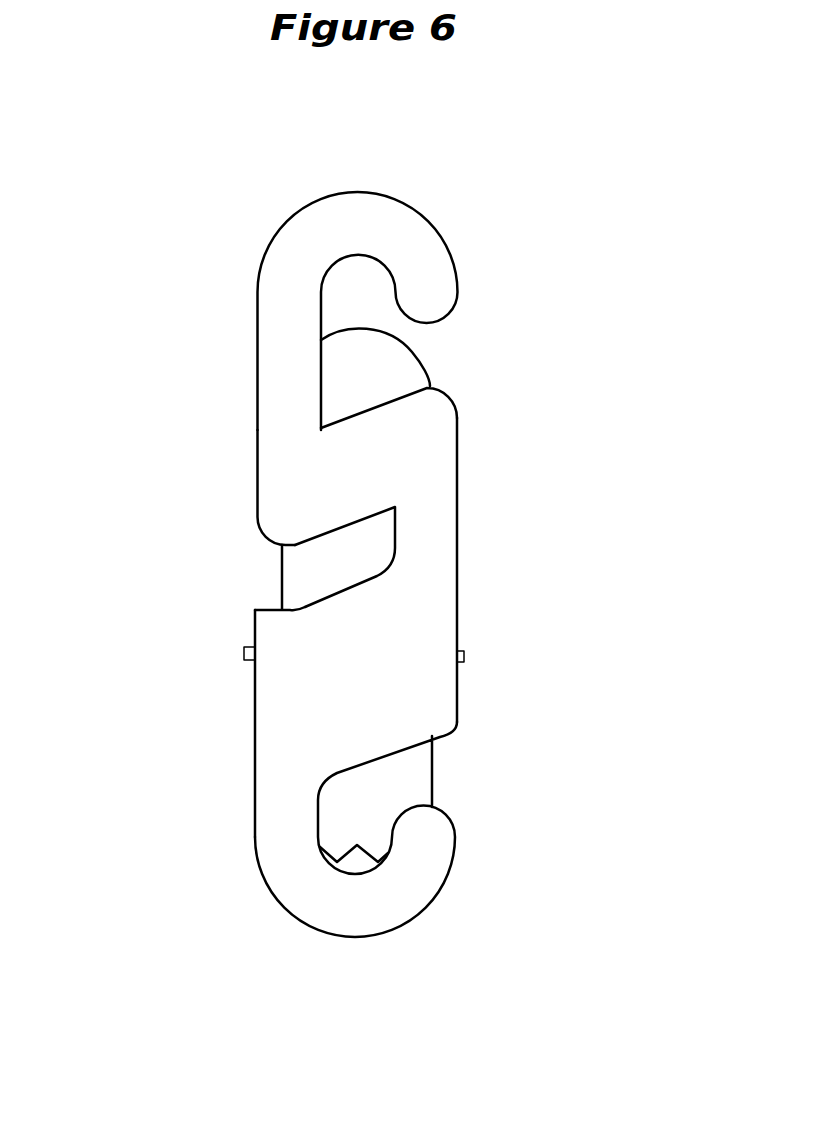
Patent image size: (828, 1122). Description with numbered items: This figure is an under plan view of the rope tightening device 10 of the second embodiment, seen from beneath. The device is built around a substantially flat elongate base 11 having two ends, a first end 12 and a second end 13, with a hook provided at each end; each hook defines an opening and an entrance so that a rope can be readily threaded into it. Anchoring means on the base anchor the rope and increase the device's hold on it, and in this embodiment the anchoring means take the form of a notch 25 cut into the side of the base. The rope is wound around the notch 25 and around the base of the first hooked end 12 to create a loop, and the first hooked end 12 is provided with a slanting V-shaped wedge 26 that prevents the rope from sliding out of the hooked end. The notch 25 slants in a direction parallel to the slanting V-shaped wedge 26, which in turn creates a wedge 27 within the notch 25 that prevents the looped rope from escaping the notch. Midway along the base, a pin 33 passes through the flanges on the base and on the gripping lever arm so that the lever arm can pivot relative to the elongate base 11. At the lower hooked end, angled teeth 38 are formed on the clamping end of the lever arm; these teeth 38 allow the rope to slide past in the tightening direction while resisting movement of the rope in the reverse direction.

The rope tightening device 10 is at (518, 593).
The elongate base 11 is at (308, 692).
The first end 12 is at (410, 240).
The second end 13 is at (327, 903).
The notch 25 is at (263, 602).
The V-shaped wedge 26 is at (330, 410).
The wedge 27 is at (385, 523).
The pin 33 is at (465, 655).
The teeth 38 is at (355, 855).